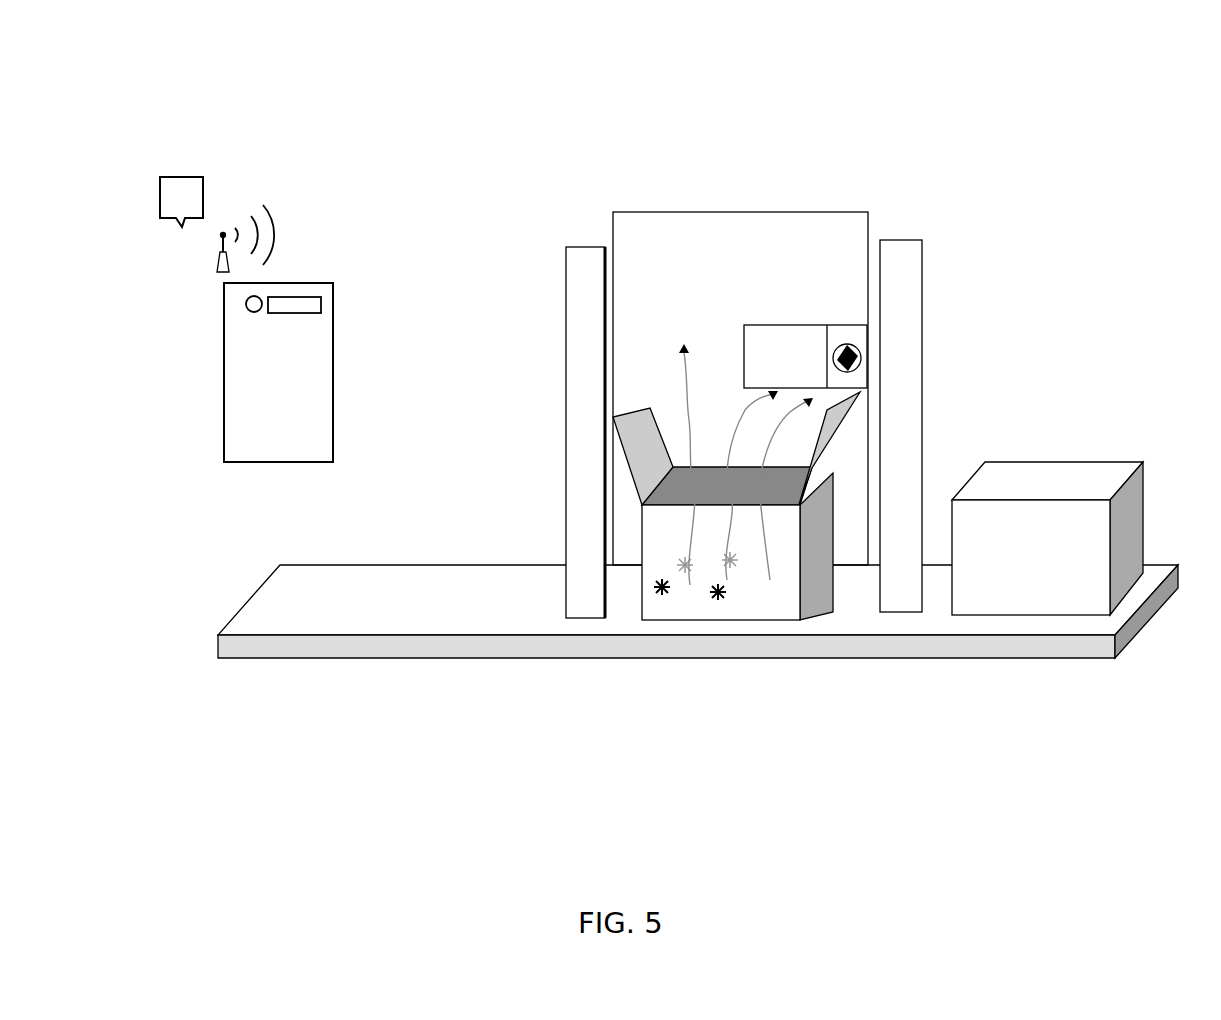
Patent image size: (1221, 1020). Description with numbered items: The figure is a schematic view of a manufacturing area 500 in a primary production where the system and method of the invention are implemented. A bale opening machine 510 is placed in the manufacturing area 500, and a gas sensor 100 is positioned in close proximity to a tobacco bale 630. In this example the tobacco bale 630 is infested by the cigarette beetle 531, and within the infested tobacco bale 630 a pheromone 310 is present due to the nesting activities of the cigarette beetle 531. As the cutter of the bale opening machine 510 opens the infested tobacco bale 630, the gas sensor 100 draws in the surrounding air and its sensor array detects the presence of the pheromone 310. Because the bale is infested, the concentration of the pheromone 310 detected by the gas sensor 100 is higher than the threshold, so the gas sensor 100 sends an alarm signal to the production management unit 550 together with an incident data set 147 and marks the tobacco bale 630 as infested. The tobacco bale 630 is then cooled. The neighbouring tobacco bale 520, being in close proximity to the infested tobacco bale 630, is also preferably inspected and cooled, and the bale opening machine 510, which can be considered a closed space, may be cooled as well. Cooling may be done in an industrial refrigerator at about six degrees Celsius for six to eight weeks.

The manufacturing area 500 is at (783, 152).
The bale opening machine 510 is at (646, 200).
The gas sensor 100 is at (862, 347).
The production management unit 550 is at (296, 255).
The pheromone 310 is at (693, 385).
The neighbouring tobacco bale 520 is at (1052, 434).
The cigarette beetle 531 is at (680, 600).
The tobacco bale 630 is at (630, 633).
The incident data set 147 is at (195, 207).